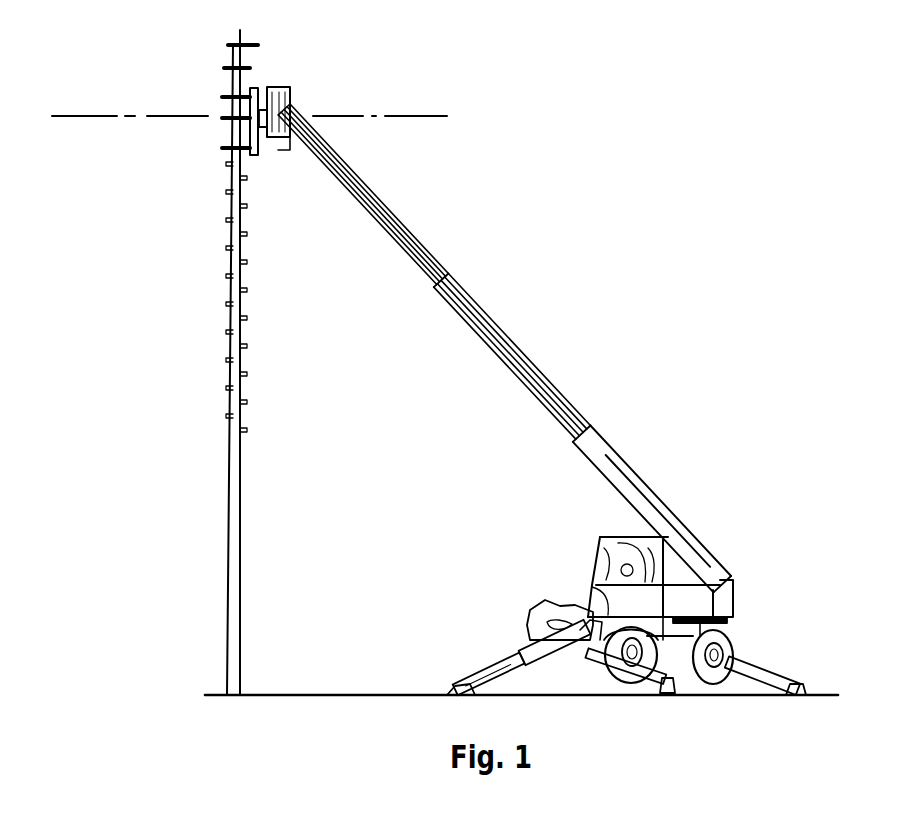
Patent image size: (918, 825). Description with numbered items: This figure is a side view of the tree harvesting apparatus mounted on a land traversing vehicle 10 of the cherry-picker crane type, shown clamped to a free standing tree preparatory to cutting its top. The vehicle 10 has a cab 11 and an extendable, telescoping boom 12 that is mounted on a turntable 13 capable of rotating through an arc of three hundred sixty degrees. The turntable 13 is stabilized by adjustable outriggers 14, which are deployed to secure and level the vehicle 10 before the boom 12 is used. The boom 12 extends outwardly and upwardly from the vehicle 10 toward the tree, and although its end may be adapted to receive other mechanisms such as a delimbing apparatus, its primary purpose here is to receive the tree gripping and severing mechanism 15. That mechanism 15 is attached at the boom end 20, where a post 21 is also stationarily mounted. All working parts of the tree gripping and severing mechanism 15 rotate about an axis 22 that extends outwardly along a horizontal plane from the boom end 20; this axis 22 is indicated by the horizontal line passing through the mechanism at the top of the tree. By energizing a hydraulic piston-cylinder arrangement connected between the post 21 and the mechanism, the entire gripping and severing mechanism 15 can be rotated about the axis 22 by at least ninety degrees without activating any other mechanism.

The vehicle 10 is at (733, 622).
The cab 11 is at (600, 588).
The extendable boom 12 is at (665, 517).
The turntable 13 is at (730, 641).
The adjustable outriggers 14 is at (497, 661).
The tree gripping and severing mechanism 15 is at (296, 90).
The boom end 20 is at (291, 137).
The post 21 is at (290, 86).
The axis 22 is at (410, 117).